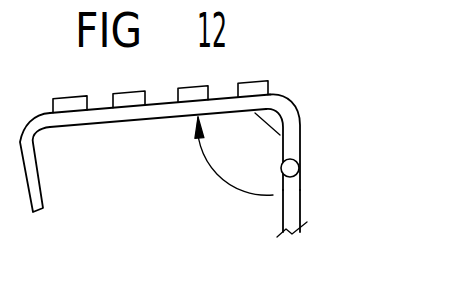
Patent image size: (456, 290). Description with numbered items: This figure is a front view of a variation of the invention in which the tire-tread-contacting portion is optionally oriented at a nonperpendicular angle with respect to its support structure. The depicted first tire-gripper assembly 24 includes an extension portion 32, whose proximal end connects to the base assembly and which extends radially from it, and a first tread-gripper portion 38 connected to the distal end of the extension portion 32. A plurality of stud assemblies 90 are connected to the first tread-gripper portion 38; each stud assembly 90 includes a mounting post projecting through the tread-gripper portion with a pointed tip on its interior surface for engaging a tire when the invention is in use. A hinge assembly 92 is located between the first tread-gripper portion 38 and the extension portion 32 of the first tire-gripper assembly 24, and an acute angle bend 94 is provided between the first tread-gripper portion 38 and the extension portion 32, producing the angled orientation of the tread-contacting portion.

The first tire-gripper assembly 24 is at (303, 144).
The extension portion 32 is at (288, 217).
The first tread-gripper portion 38 is at (150, 110).
The stud assembly 90 is at (262, 88).
The hinge assembly 92 is at (300, 169).
The acute angle bend 94 is at (212, 167).